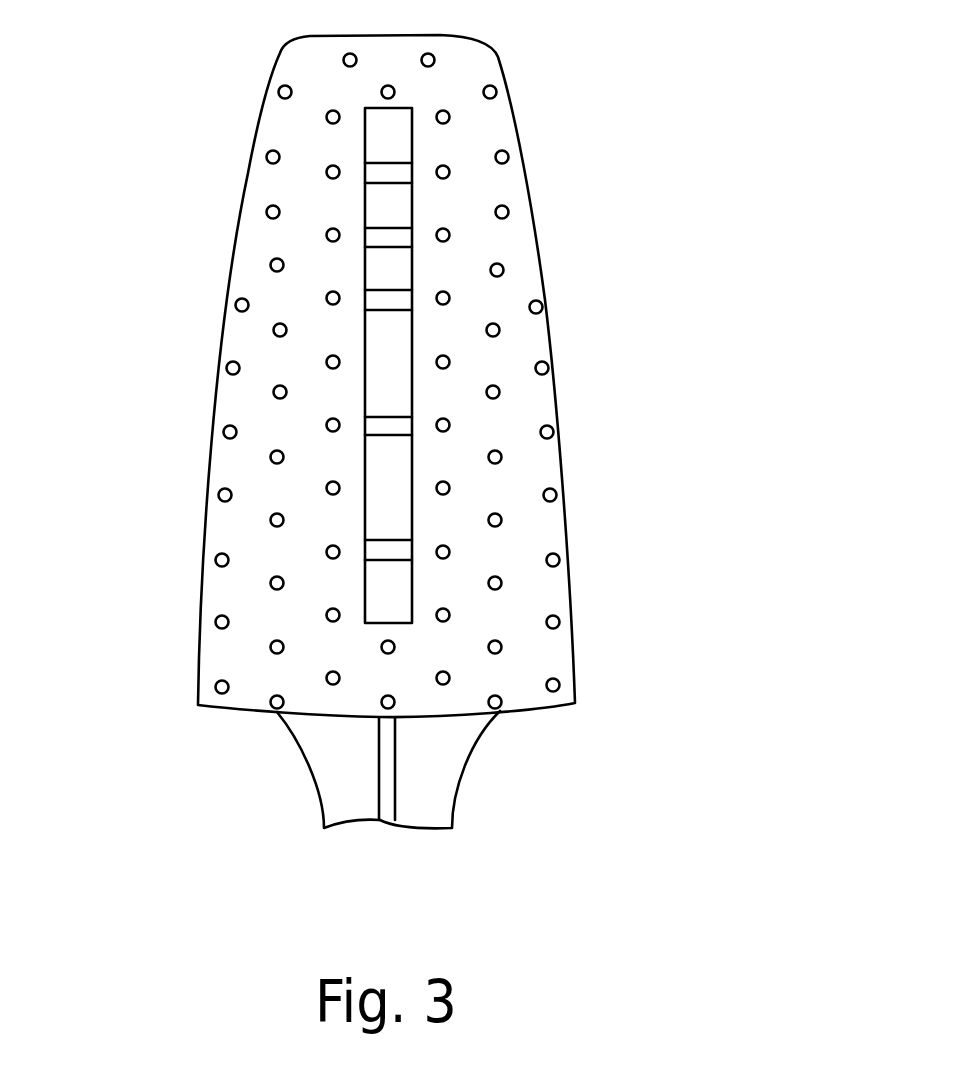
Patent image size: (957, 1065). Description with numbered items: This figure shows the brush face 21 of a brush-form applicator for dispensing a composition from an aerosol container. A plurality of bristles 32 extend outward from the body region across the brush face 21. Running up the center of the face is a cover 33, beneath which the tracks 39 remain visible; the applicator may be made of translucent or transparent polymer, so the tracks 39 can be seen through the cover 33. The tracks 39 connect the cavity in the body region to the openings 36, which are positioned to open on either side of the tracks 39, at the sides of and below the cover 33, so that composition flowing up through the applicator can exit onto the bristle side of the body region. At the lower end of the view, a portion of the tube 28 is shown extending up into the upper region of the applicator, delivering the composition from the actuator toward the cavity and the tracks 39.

The brush face 21 is at (468, 73).
The tube 28 is at (387, 792).
The bristles 32 is at (342, 61).
The cover 33 is at (388, 382).
The openings 36 is at (363, 238).
The tracks 39 is at (387, 237).